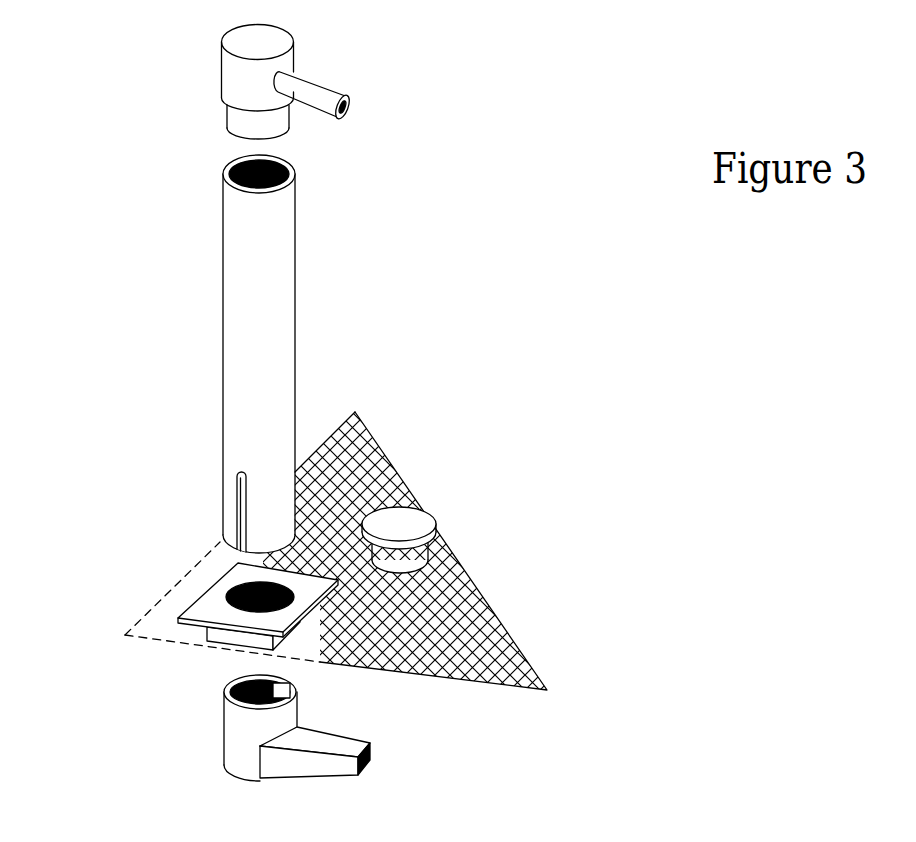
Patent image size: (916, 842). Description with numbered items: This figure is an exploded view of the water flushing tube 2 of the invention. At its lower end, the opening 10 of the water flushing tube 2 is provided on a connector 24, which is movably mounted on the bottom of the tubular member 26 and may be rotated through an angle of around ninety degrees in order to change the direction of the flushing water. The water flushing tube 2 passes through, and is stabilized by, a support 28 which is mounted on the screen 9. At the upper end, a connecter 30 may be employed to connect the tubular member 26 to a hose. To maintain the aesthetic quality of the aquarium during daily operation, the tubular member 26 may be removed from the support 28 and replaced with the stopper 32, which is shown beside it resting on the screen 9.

The water flushing tube 2 is at (212, 320).
The screen 9 is at (543, 683).
The opening 10 is at (370, 760).
The connector 24 is at (230, 773).
The tubular member 26 is at (296, 236).
The support 28 is at (197, 610).
The connecter 30 is at (294, 36).
The stopper 32 is at (437, 525).